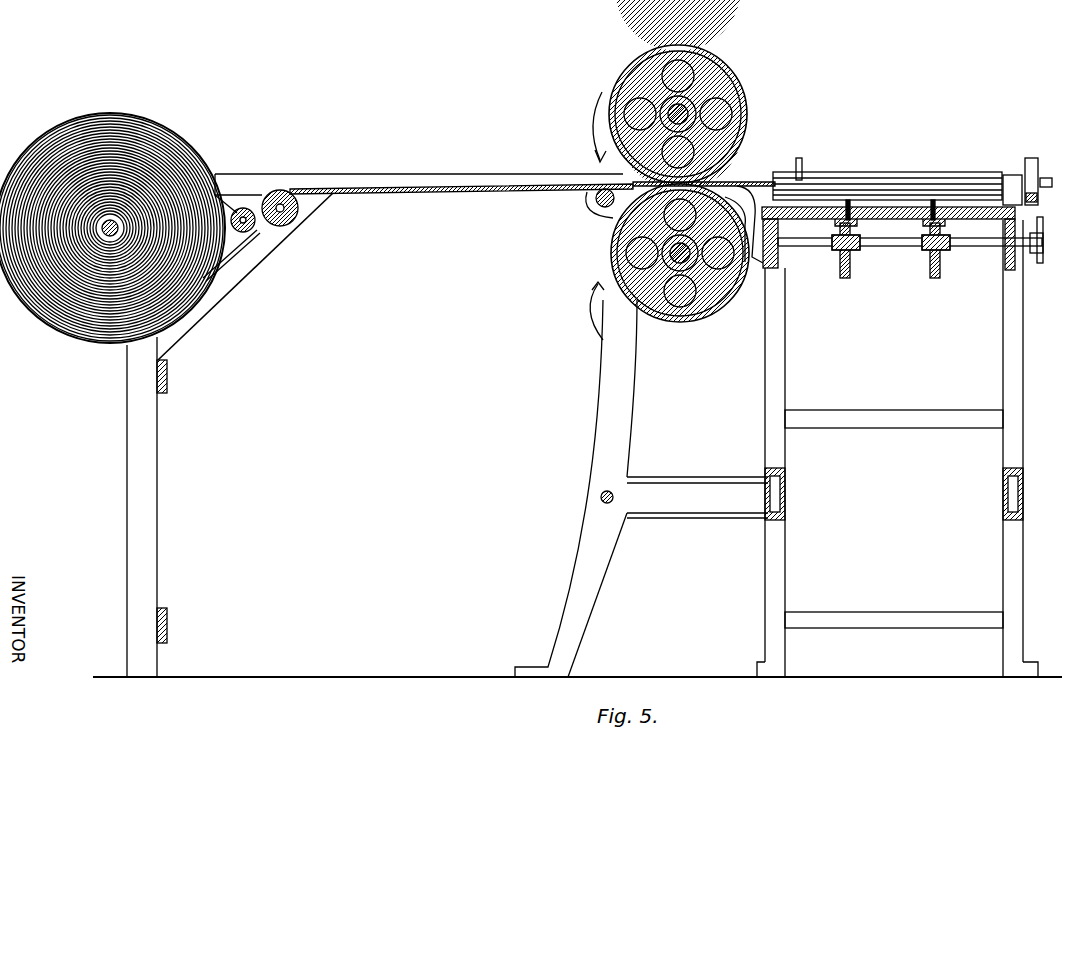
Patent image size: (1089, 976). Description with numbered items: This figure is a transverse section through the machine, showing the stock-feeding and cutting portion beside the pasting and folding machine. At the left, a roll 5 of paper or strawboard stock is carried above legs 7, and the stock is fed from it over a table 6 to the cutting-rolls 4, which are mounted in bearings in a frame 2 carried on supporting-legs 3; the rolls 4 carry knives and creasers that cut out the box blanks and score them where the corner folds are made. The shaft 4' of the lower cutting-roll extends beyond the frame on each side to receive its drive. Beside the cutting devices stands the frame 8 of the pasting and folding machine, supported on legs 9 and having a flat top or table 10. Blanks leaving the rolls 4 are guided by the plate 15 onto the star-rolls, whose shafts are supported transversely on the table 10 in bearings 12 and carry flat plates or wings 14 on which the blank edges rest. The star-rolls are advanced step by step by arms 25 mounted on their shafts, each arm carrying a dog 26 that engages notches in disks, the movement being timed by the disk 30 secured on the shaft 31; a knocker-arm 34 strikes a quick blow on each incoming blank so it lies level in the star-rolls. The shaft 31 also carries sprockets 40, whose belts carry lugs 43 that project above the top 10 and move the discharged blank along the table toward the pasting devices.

The frame 2 is at (612, 222).
The supporting-legs 3 is at (610, 437).
The cutting-rolls 4 is at (667, 170).
The shaft of the lower cutting-roll 4' is at (658, 276).
The roll 5 is at (173, 147).
The table 6 is at (409, 195).
The legs 7 is at (147, 470).
The frame of the pasting and folding machine 8 is at (1000, 252).
The legs 9 is at (780, 385).
The top or table 10 is at (903, 220).
The bearings 12 is at (783, 172).
The flat plates or wings 14 is at (940, 184).
The plate 15 is at (770, 192).
The arms 25 is at (1037, 160).
The dog 26 is at (1027, 250).
The disk 30 is at (1040, 250).
The shaft 31 is at (828, 246).
The knocker-arm 34 is at (803, 165).
The sprockets 40 is at (932, 262).
The lugs 43 is at (930, 203).